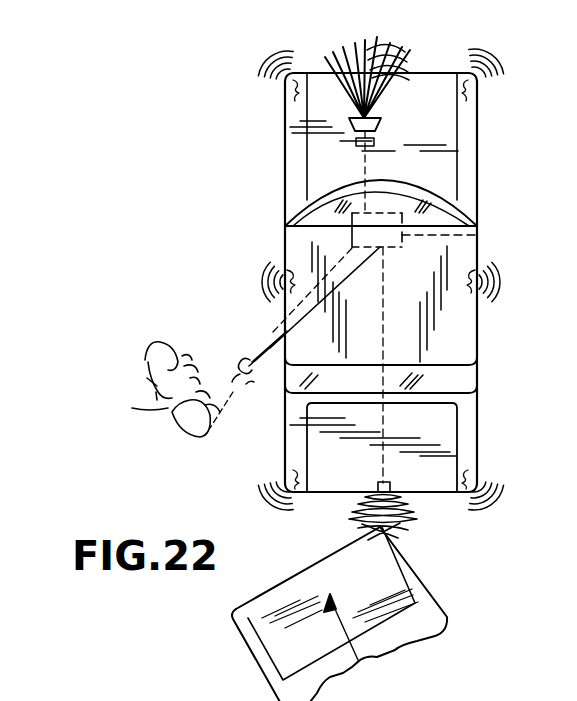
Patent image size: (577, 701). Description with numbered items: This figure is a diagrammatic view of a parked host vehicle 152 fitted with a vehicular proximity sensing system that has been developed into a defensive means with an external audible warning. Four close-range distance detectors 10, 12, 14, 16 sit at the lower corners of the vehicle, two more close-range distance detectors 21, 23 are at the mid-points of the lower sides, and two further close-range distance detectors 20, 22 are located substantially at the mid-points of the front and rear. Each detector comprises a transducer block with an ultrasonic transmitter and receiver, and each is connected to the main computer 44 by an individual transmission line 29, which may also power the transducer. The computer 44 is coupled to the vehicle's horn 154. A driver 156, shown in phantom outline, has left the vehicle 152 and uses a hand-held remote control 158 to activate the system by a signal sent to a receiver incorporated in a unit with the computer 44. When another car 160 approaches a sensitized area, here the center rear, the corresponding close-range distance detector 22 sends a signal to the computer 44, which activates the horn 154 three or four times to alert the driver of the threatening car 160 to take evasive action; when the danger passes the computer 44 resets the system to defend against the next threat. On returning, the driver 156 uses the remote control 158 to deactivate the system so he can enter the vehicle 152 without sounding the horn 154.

The close-range distance detector 10 is at (283, 100).
The close-range distance detector 12 is at (478, 103).
The close-range distance detector 14 is at (480, 458).
The close-range distance detector 16 is at (283, 470).
The close-range distance detector 20 is at (407, 78).
The close-range distance detector 21 is at (284, 250).
The close-range distance detector 22 is at (342, 498).
The close-range distance detector 23 is at (479, 264).
The transmission line 29 is at (390, 430).
The main computer 44 is at (476, 229).
The vehicle 152 is at (455, 338).
The horn 154 is at (383, 127).
The driver 156 is at (132, 408).
The hand-held remote control 158 is at (243, 356).
The car 160 is at (410, 571).